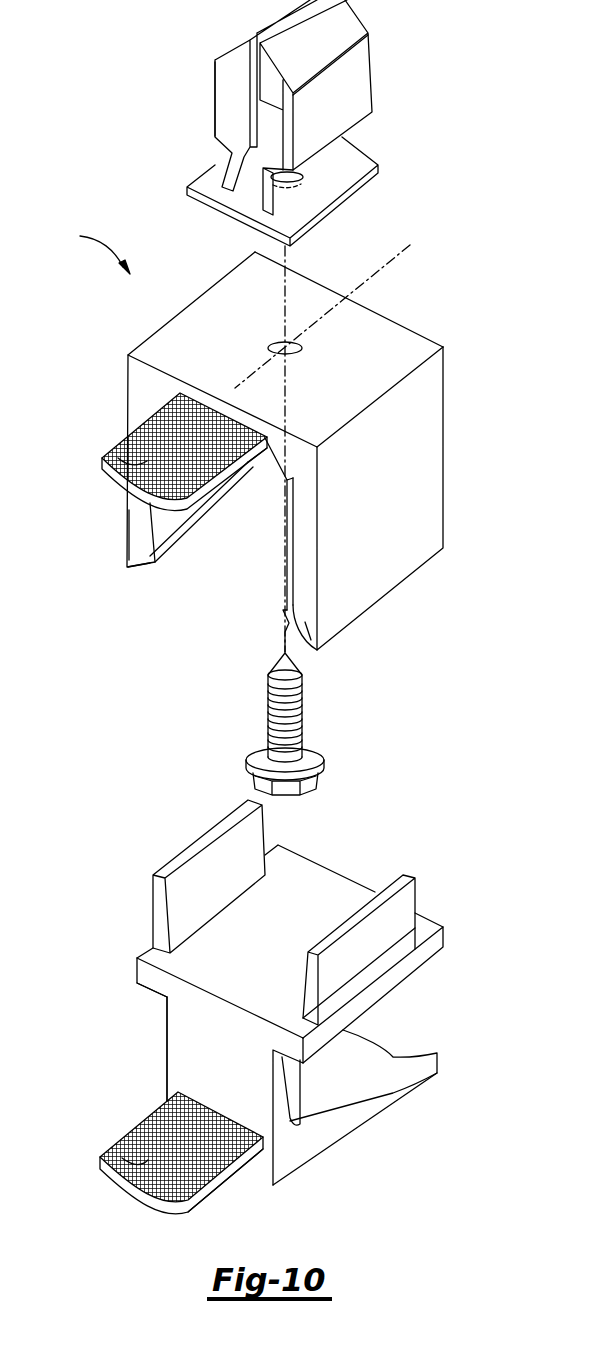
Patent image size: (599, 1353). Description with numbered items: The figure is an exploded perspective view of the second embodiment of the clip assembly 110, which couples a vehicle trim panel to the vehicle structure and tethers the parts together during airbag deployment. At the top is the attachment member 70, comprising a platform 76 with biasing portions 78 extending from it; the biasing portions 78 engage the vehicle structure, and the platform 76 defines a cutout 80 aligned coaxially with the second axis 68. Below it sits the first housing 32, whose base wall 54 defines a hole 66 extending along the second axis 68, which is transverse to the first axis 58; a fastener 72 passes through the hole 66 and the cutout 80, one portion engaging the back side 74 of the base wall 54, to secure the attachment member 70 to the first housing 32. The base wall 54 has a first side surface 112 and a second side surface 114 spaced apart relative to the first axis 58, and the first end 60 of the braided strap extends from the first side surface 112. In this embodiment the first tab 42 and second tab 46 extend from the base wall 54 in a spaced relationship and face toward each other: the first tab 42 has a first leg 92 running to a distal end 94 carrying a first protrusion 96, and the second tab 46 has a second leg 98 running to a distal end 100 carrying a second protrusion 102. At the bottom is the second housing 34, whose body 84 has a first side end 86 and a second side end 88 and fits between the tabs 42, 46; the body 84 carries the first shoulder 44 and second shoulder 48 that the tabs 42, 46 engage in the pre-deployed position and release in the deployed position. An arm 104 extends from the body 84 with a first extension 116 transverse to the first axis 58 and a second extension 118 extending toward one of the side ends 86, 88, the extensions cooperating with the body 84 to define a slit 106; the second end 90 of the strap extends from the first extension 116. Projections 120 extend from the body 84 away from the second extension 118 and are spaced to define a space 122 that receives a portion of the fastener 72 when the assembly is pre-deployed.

The first housing 32 is at (277, 474).
The second housing 34 is at (283, 1007).
The first tab 42 is at (137, 556).
The first shoulder 44 is at (150, 1000).
The second tab 46 is at (307, 629).
The second shoulder 48 is at (286, 1062).
The base wall 54 is at (308, 294).
The first axis 58 is at (412, 248).
The first end of strap 60 is at (249, 445).
The hole 66 is at (305, 352).
The second axis 68 is at (283, 578).
The attachment member 70 is at (287, 95).
The fastener 72 is at (302, 716).
The back side of base wall 74 is at (290, 479).
The platform 76 is at (357, 170).
The biasing portions 78 is at (214, 100).
The cutout 80 is at (302, 178).
The body 84 is at (312, 874).
The first side end 86 is at (212, 1014).
The second side end 88 is at (445, 937).
The second end of strap 90 is at (253, 1142).
The first leg 92 is at (135, 516).
The distal end of first leg 94 is at (133, 543).
The first protrusion 96 is at (155, 562).
The second leg 98 is at (432, 428).
The distal end of second leg 100 is at (310, 600).
The second protrusion 102 is at (284, 628).
The arm 104 is at (295, 1168).
The slit 106 is at (382, 1088).
The clip assembly 110 is at (81, 252).
The first side surface 112 is at (291, 450).
The second side surface 114 is at (395, 322).
The first extension 116 is at (178, 1073).
The second extension 118 is at (342, 1110).
The projections 120 is at (186, 870).
The space 122 is at (283, 885).